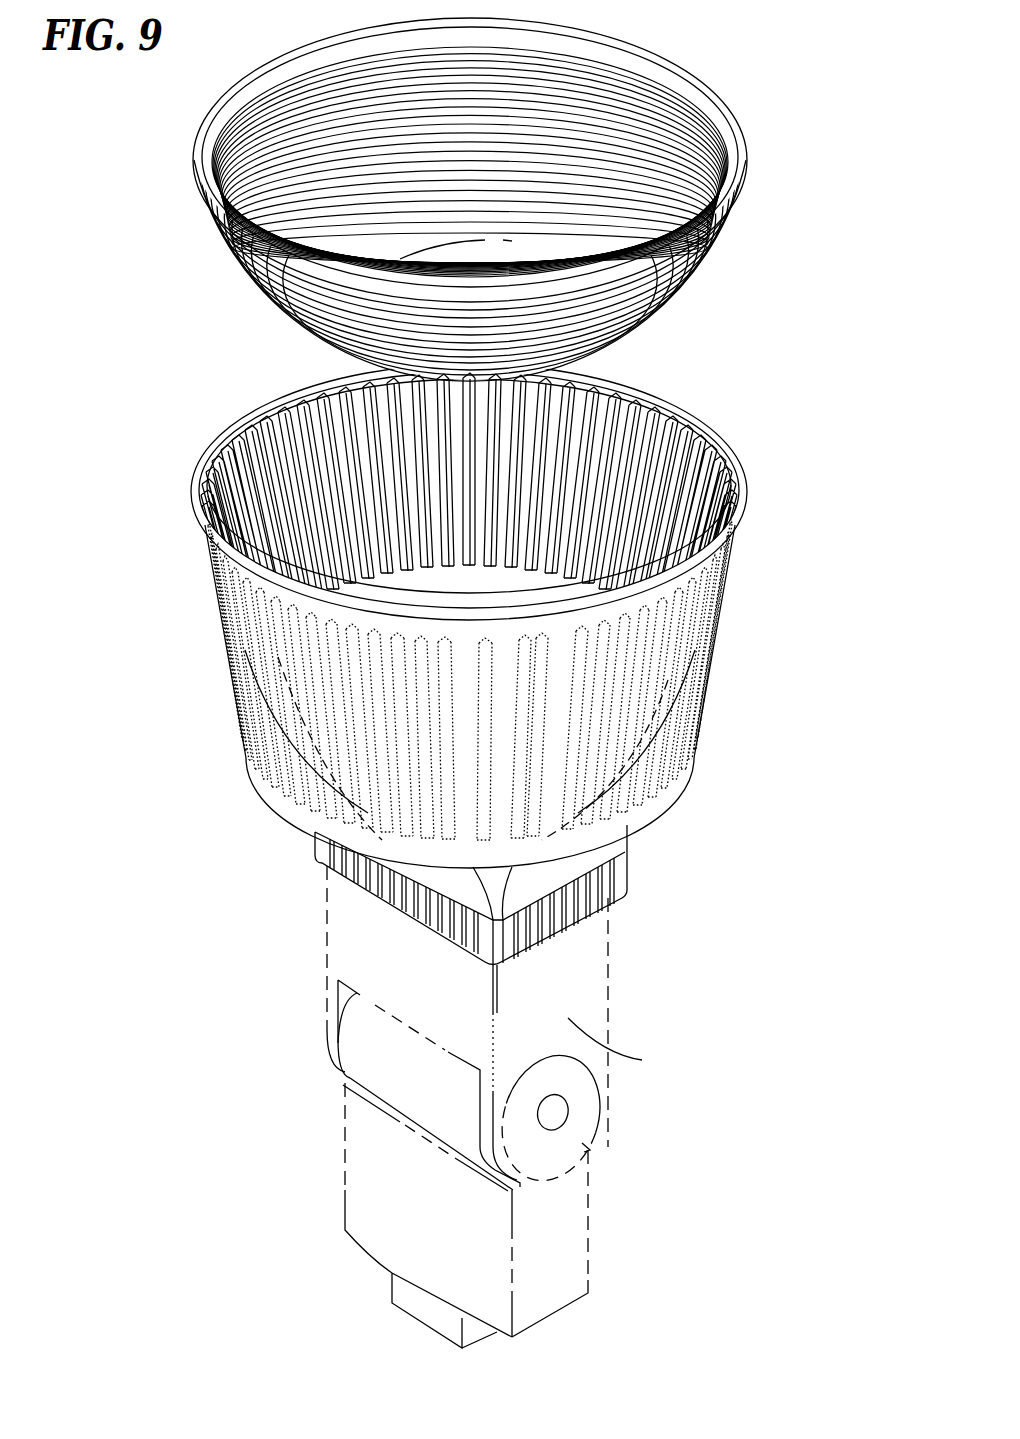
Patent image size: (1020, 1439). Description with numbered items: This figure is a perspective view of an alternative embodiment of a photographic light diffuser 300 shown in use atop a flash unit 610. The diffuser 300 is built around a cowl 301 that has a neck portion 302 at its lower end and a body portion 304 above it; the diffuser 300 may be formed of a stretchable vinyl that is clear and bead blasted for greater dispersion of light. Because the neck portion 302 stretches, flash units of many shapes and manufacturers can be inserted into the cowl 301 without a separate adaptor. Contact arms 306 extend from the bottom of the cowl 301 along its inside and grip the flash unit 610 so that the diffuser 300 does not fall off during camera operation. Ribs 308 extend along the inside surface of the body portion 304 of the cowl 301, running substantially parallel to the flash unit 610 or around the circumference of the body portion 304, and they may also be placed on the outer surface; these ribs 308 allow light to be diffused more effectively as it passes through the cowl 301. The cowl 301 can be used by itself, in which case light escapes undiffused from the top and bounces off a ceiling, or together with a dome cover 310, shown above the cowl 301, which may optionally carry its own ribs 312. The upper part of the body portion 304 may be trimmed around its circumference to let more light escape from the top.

The diffuser 300 is at (172, 683).
The cowl 301 is at (737, 465).
The neck portion 302 is at (618, 845).
The body portion 304 is at (713, 637).
The contact arms 306 is at (600, 893).
The ribs 308 is at (297, 423).
The dome cover 310 is at (740, 140).
The ribs 312 is at (670, 303).
The flash unit 610 is at (570, 1017).